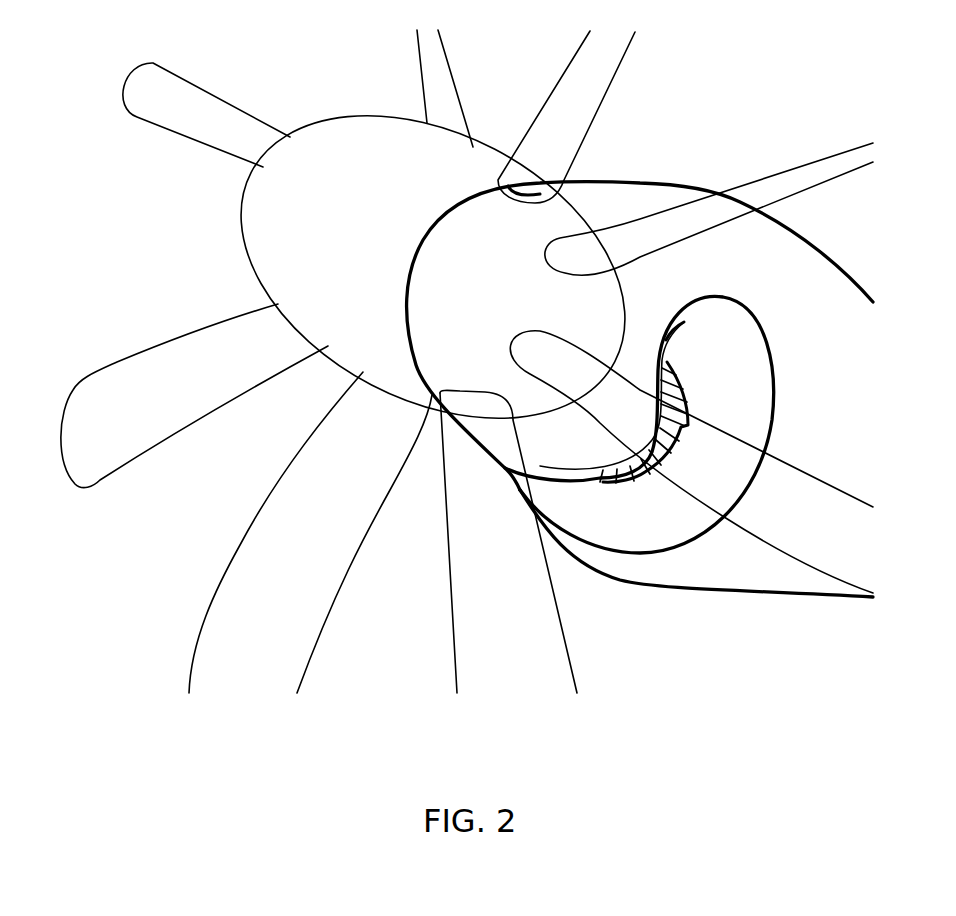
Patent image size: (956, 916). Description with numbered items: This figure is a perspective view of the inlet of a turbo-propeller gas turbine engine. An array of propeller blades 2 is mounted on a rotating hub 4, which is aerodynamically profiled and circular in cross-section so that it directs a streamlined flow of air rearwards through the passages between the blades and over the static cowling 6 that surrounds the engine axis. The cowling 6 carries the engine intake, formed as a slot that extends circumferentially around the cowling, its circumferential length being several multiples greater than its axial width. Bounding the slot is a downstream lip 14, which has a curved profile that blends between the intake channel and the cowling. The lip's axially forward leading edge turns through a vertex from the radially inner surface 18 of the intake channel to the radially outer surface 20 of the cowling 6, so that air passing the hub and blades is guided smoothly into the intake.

The propeller blades 2 is at (598, 86).
The rotating hub 4 is at (262, 223).
The static cowling 6 is at (618, 203).
The downstream lip 14 is at (633, 517).
The radially inner surface 18 is at (707, 408).
The radially outer surface 20 is at (685, 535).